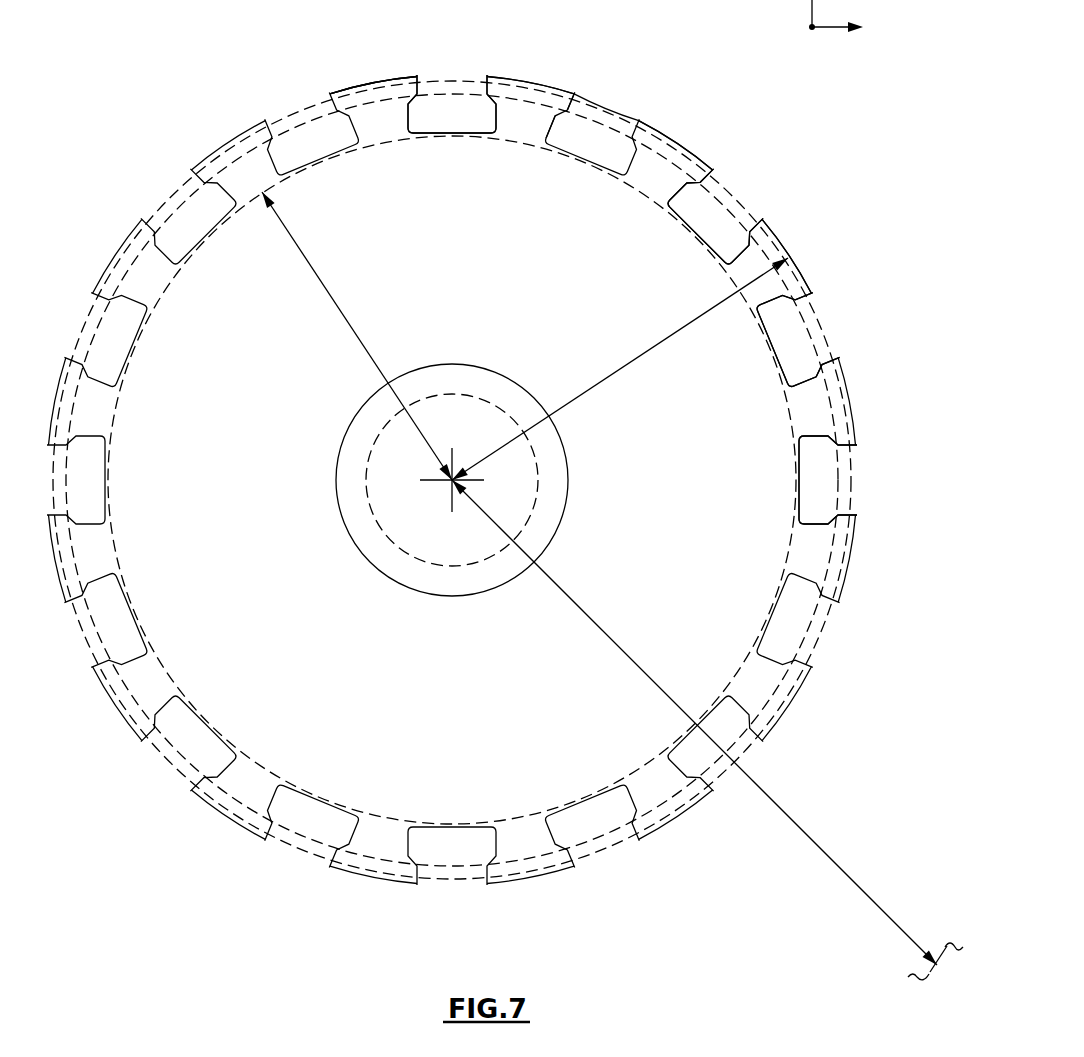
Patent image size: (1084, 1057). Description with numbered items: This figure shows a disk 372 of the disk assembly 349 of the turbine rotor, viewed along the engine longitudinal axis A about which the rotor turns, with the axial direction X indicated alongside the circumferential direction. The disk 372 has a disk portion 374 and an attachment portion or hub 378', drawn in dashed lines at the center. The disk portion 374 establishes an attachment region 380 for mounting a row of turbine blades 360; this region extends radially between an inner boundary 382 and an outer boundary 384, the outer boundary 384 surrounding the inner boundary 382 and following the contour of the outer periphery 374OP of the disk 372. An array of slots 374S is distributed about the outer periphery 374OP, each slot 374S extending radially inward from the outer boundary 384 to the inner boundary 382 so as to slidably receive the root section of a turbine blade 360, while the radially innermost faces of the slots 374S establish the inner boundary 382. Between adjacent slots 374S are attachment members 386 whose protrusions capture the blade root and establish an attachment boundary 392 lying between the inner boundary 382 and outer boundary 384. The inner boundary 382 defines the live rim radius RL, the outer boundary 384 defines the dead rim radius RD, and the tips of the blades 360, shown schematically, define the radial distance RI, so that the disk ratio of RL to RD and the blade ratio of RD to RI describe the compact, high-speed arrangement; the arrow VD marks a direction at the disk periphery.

The disk assembly 349 is at (450, 466).
The disk 372 is at (172, 112).
The attachment region 380 is at (355, 83).
The attachment member 386 is at (383, 90).
The disk portion 374 is at (512, 105).
The outer periphery 374OP is at (558, 82).
The outer boundary 384 is at (628, 115).
The inner boundary 382 is at (673, 162).
The slot 374S is at (703, 200).
The disk velocity direction VD is at (780, 229).
The attachment boundary 392 is at (845, 477).
The hub 378' is at (452, 459).
The longitudinal axis A is at (452, 481).
The live rim radius RL is at (327, 292).
The dead rim radius RD is at (610, 376).
The radial distance RI is at (813, 840).
The turbine blade 360 is at (940, 975).
The axial direction X is at (812, 27).